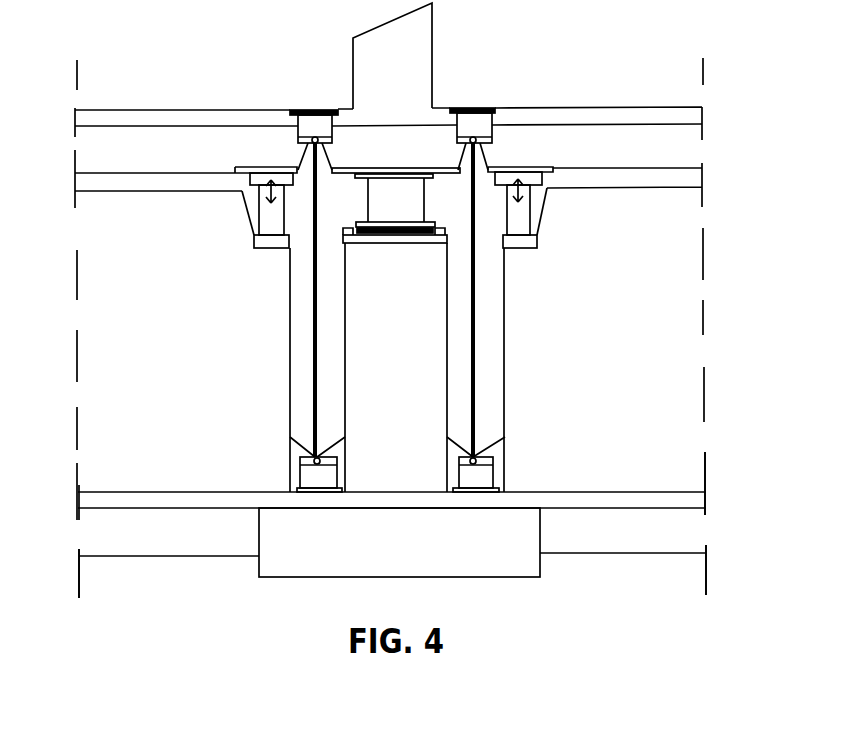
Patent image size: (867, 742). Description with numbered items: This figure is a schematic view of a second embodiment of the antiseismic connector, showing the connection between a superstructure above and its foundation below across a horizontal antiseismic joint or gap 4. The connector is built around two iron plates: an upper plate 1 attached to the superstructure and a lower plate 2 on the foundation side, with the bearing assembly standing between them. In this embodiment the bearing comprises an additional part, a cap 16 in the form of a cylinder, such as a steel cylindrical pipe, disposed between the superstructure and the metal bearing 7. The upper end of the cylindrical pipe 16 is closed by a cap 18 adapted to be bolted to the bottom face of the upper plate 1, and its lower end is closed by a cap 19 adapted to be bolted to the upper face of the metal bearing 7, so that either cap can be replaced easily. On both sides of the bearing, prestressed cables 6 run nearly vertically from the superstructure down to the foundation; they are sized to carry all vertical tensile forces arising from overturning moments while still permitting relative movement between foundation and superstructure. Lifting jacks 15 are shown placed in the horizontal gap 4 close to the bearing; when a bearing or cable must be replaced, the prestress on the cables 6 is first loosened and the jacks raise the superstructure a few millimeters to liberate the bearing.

The upper iron plate 1 is at (340, 170).
The lower iron plate 2 is at (357, 243).
The horizontal antiseismic joint 4 is at (705, 178).
The prestressed cables 6 is at (477, 407).
The metal bearing 7 is at (343, 223).
The lifting jacks 15 is at (517, 222).
The cap 16 is at (388, 206).
The upper cap 18 is at (375, 175).
The lower cap 19 is at (362, 223).